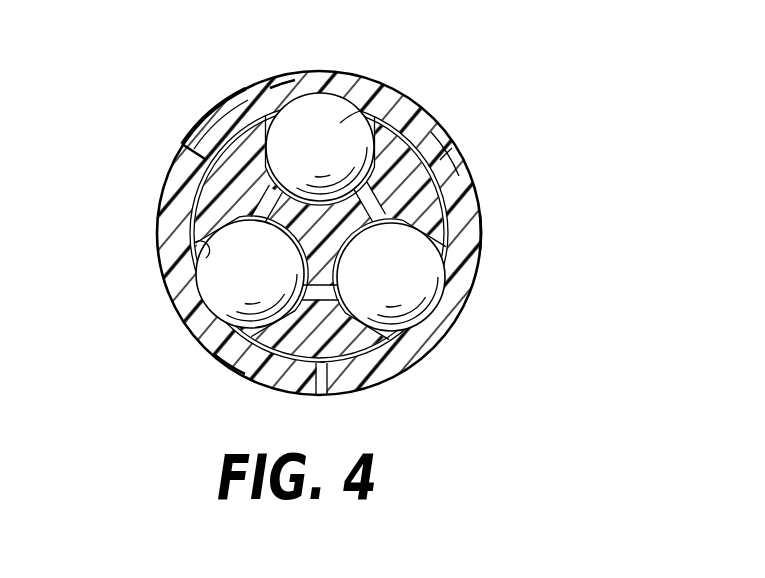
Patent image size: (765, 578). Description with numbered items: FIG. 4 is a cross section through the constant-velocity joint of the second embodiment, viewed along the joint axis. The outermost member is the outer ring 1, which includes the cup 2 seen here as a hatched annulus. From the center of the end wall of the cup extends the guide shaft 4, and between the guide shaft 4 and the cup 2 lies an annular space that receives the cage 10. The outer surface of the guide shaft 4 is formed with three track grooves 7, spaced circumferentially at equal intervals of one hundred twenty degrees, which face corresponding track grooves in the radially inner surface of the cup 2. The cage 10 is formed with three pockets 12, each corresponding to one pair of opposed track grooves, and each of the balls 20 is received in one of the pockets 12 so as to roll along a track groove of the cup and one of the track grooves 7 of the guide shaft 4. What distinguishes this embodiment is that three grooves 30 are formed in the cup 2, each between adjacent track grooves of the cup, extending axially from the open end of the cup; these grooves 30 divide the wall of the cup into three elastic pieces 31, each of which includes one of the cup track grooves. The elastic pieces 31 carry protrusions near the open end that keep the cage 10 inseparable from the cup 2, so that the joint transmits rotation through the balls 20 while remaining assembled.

The outer ring 1 is at (207, 113).
The cup 2 is at (247, 98).
The guide shaft 4 is at (447, 152).
The track grooves 7 is at (360, 233).
The cage 10 is at (193, 190).
The pockets 12 is at (340, 123).
The balls 20 is at (367, 110).
The grooves 30 is at (185, 147).
The elastic pieces 31 is at (300, 73).